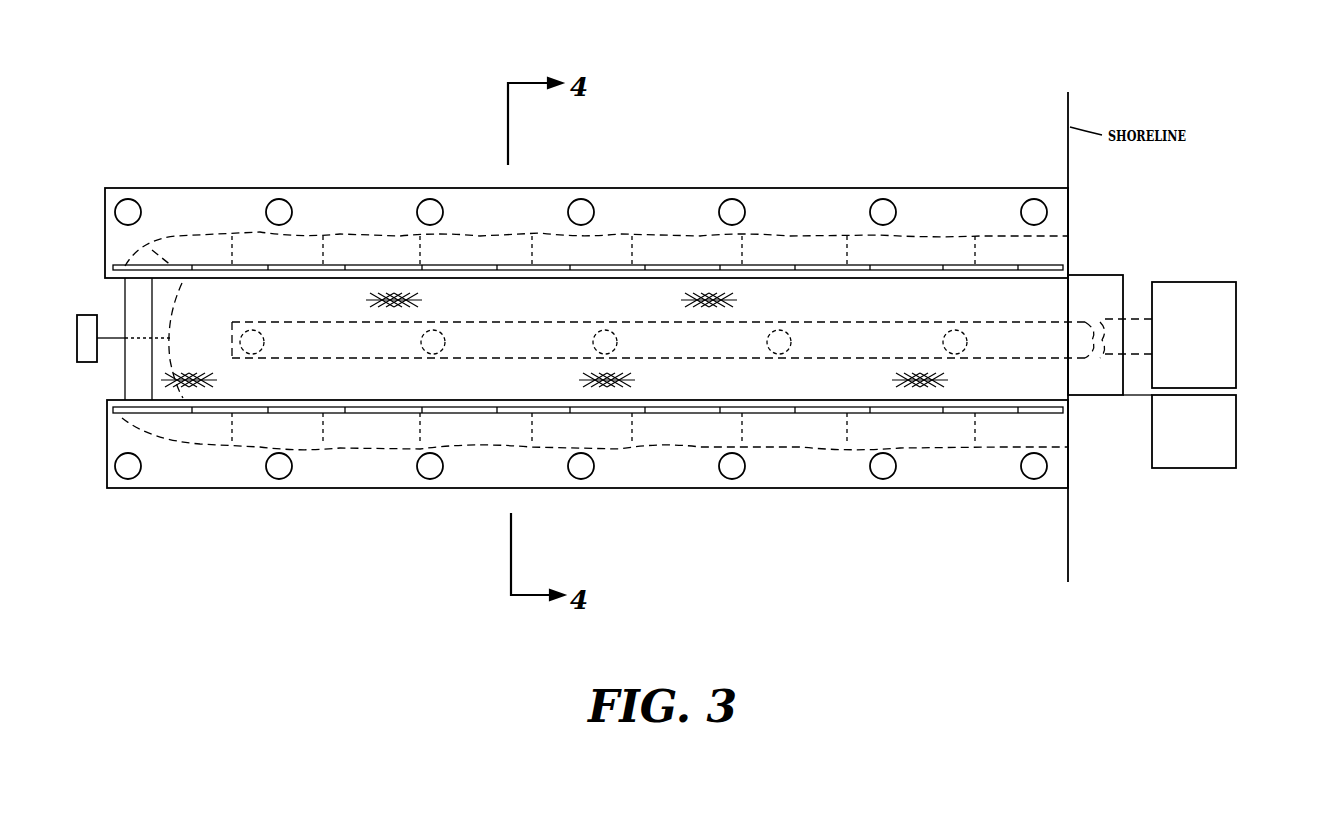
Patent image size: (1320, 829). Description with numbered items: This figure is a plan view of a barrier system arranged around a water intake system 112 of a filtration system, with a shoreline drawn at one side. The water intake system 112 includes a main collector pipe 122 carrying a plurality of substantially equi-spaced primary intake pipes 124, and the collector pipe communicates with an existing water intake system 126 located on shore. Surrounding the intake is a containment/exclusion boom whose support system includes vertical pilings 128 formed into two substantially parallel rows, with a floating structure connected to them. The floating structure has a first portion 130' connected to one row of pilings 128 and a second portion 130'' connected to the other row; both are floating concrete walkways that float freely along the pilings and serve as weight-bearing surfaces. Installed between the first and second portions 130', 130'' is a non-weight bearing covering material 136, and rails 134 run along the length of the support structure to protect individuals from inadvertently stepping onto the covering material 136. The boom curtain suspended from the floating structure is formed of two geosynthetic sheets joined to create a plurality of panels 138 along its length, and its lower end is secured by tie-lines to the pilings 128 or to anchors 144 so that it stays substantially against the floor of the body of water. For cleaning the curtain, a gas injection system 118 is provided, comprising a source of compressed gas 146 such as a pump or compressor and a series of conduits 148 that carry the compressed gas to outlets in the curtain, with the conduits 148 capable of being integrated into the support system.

The water intake system 112 is at (1196, 258).
The gas injection system 118 is at (1199, 495).
The main collector pipe 122 is at (331, 360).
The primary intake pipes 124 is at (253, 350).
The existing water intake system 126 is at (1234, 378).
The vertical pilings 128 is at (736, 202).
The first portion of the floating structure 130' is at (586, 200).
The second portion of the floating structure 130'' is at (587, 487).
The rails 134 is at (676, 265).
The covering material 136 is at (874, 307).
The panels 138 is at (135, 307).
The anchors 144 is at (82, 363).
The source of compressed gas 146 is at (1232, 458).
The conduits 148 is at (1108, 275).